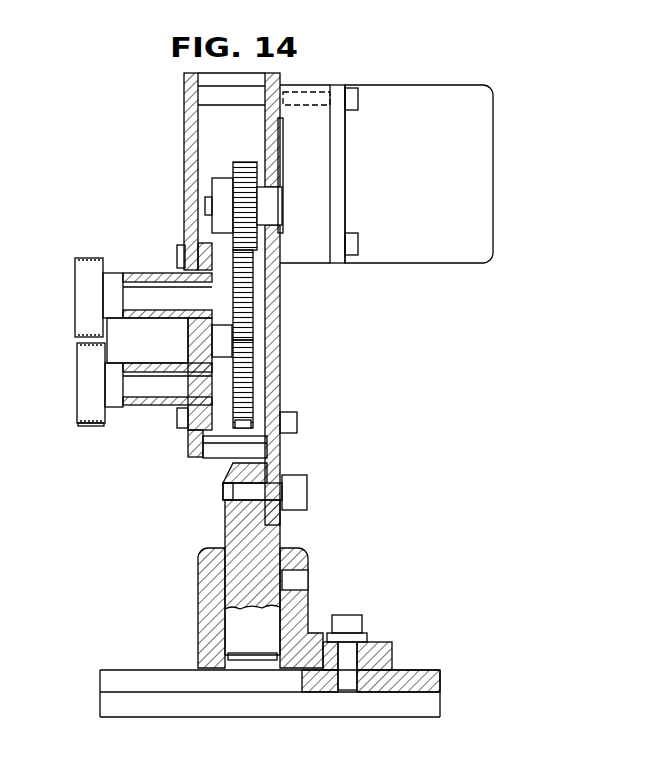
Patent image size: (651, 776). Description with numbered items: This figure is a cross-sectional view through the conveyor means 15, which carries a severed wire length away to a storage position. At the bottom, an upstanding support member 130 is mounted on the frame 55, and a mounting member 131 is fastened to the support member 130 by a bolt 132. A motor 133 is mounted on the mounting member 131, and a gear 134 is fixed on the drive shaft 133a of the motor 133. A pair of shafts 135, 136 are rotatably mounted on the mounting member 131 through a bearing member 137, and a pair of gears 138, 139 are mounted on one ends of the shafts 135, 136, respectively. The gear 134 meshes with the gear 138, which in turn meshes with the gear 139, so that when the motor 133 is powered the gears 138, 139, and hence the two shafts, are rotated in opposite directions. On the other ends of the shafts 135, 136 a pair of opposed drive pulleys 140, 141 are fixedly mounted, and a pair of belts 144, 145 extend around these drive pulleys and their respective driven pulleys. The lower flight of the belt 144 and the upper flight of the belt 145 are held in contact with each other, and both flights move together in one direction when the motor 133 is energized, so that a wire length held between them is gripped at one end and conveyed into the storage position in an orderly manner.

The conveyor means 15 is at (178, 156).
The frame 55 is at (285, 702).
The support member 130 is at (230, 524).
The mounting member 131 is at (280, 348).
The bolt 132 is at (298, 498).
The motor 133 is at (475, 147).
The drive shaft 133a is at (277, 170).
The gear 134 is at (238, 161).
The shaft 135 is at (153, 297).
The shaft 136 is at (150, 385).
The bearing member 137 is at (146, 272).
The gear 138 is at (254, 281).
The gear 139 is at (254, 400).
The drive pulley 140 is at (107, 270).
The drive pulley 141 is at (84, 370).
The belt 144 is at (83, 257).
The belt 145 is at (93, 427).